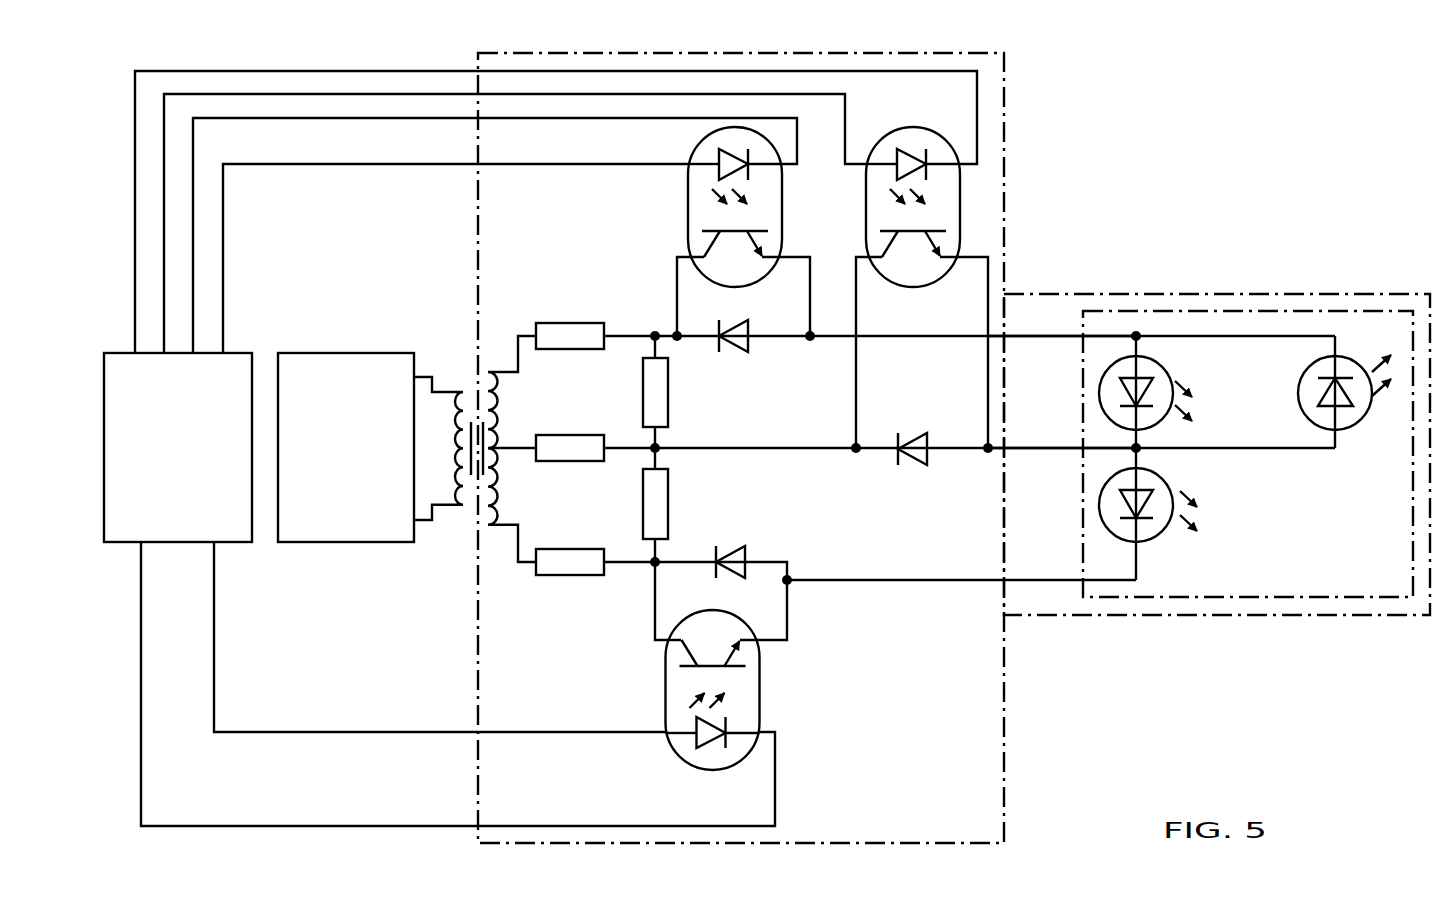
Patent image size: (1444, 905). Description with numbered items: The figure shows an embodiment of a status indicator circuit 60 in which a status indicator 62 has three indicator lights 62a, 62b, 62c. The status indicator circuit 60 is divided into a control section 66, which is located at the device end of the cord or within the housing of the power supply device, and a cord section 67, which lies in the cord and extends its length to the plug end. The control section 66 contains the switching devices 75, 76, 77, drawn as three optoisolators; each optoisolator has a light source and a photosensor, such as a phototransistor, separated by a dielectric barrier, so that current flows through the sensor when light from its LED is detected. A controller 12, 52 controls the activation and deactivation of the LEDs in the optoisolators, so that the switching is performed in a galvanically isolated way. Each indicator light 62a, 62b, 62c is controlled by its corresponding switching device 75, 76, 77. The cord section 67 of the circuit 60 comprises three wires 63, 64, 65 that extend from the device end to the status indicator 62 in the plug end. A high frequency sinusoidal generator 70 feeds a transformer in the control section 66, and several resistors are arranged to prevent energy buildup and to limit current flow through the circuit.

The controller 12 is at (212, 467).
The controller 52 is at (233, 542).
The status indicator circuit 60 is at (1232, 165).
The status indicator 62 is at (1328, 311).
The indicator light 62a is at (1107, 366).
The indicator light 62b is at (1302, 412).
The indicator light 62c is at (1163, 480).
The wire 63 is at (1028, 336).
The wire 64 is at (1032, 448).
The wire 65 is at (918, 580).
The control section 66 is at (1004, 153).
The cord section 67 is at (1163, 294).
The high frequency sinusoidal generator 70 is at (345, 542).
The switching device 75 is at (688, 246).
The switching device 76 is at (866, 246).
The switching device 77 is at (759, 697).